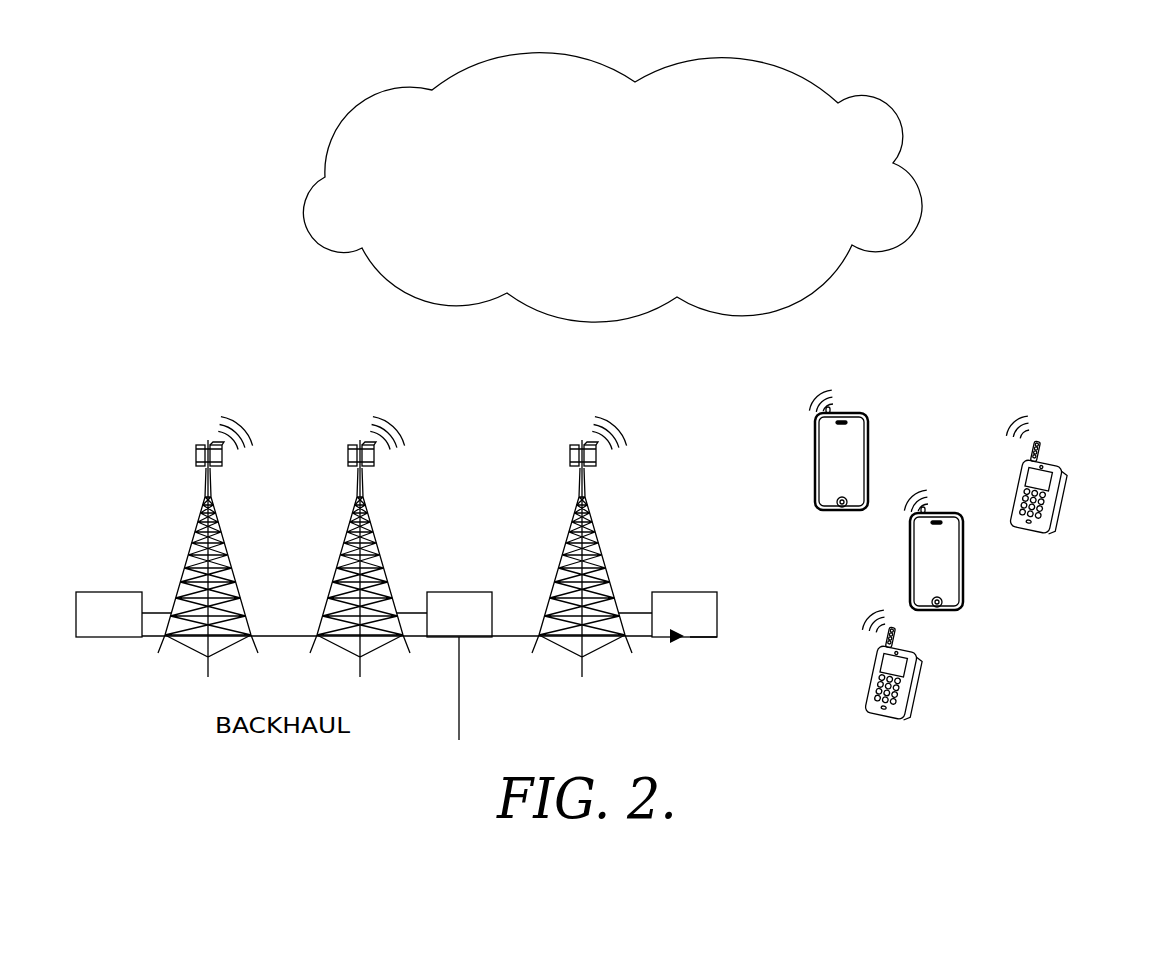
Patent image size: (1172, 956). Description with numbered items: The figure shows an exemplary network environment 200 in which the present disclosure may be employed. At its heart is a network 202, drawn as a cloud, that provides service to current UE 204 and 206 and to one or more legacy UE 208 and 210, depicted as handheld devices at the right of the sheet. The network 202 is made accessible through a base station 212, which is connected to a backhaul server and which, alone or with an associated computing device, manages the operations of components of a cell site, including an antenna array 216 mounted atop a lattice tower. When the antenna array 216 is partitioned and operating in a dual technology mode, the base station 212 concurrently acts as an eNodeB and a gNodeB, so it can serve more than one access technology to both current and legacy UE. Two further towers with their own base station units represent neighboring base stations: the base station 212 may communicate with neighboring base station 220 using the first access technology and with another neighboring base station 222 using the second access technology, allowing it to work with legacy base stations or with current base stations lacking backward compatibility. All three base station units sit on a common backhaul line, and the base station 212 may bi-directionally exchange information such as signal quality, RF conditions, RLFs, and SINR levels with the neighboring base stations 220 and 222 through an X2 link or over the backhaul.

The network environment 200 is at (88, 141).
The network 202 is at (612, 187).
The current UE 204 is at (868, 458).
The current UE 206 is at (963, 560).
The legacy UE 208 is at (920, 680).
The legacy UE 210 is at (1062, 495).
The base station 212 is at (682, 592).
The antenna array 216 is at (596, 455).
The neighboring base station 220 is at (457, 592).
The neighboring base station 222 is at (112, 592).